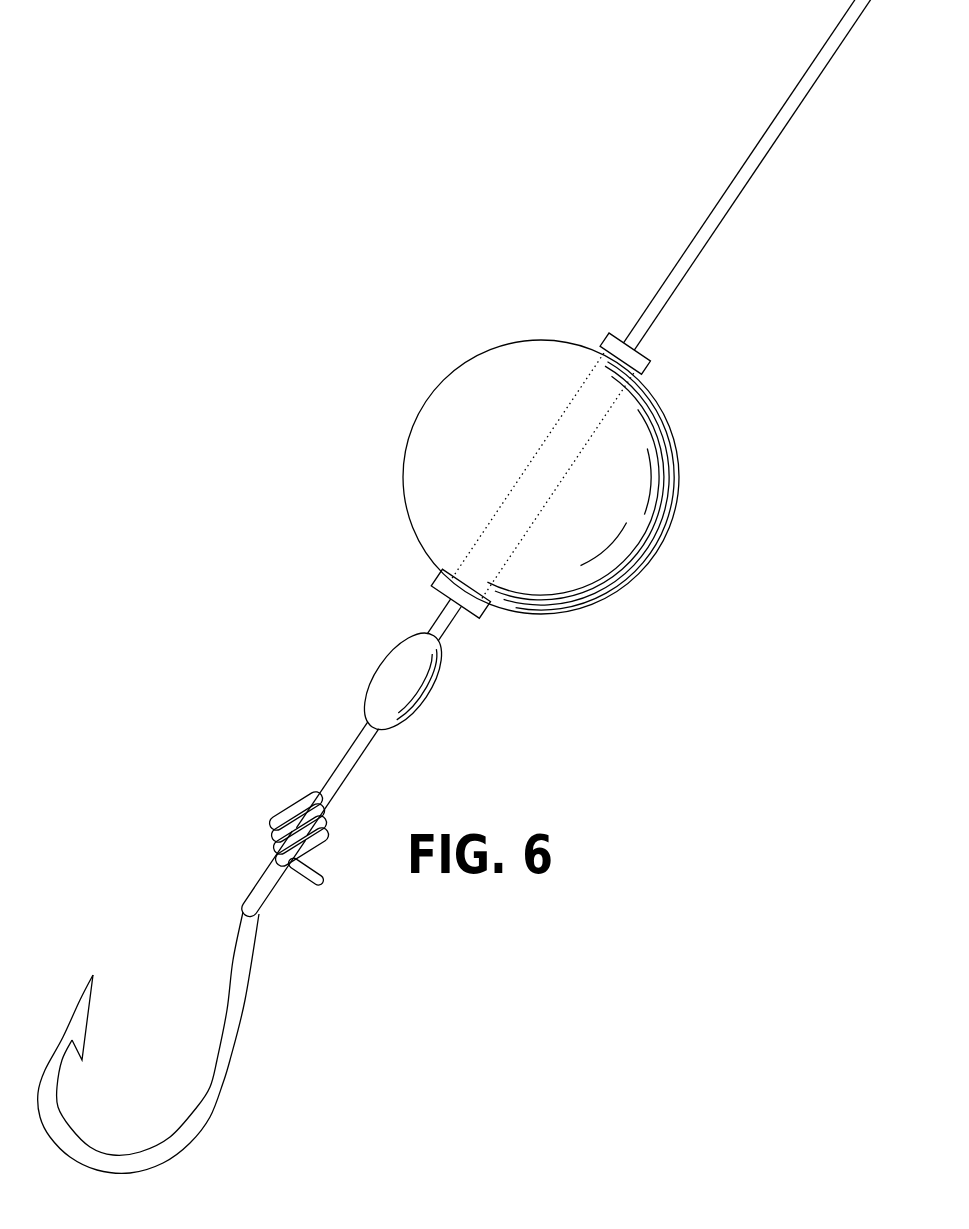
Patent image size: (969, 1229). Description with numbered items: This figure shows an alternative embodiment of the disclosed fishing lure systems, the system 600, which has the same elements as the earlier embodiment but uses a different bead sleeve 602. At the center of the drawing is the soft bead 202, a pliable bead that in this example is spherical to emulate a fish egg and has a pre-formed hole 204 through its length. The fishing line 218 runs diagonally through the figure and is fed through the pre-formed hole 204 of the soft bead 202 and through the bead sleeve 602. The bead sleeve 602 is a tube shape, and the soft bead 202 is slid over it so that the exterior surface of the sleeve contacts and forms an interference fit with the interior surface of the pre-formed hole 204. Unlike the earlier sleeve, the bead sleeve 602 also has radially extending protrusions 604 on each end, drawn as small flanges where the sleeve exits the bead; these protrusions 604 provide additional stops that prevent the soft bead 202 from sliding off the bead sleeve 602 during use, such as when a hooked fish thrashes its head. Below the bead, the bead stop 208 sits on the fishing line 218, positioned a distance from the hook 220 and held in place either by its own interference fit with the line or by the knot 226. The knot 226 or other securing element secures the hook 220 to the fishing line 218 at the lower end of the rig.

The fishing lure system 600 is at (394, 352).
The fishing line 218 is at (772, 150).
The radially extending protrusions 604 is at (652, 368).
The soft bead 202 is at (680, 478).
The bead sleeve 602 is at (522, 469).
The pre-formed hole 204 is at (558, 498).
The bead stop 208 is at (440, 702).
The knot 226 is at (265, 835).
The hook 220 is at (240, 1053).